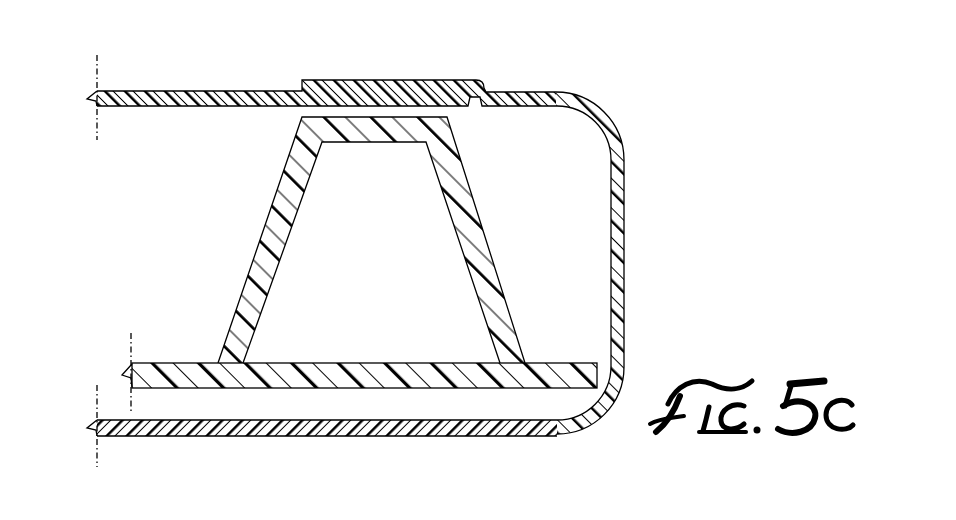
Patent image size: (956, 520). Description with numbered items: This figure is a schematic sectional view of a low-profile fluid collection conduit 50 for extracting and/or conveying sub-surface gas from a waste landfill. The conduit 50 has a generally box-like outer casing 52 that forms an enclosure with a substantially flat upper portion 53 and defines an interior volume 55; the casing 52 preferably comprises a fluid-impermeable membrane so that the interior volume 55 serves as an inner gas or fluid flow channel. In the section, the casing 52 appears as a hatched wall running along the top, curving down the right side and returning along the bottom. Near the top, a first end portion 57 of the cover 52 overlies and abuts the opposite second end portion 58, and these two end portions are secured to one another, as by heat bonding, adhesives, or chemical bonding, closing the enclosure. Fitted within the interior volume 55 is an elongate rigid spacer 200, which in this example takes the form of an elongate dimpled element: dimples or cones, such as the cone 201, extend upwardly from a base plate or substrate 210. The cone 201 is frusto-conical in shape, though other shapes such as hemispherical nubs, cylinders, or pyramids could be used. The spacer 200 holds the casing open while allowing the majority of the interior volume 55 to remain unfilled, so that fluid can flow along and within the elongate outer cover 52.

The conduit 50 is at (440, 242).
The outer casing 52 is at (620, 236).
The upper portion 53 is at (216, 90).
The interior volume 55 is at (568, 313).
The first end portion 57 is at (426, 74).
The second end portion 58 is at (451, 116).
The elongate rigid spacer 200 is at (345, 264).
The cone 201 is at (478, 245).
The base plate 210 is at (378, 362).